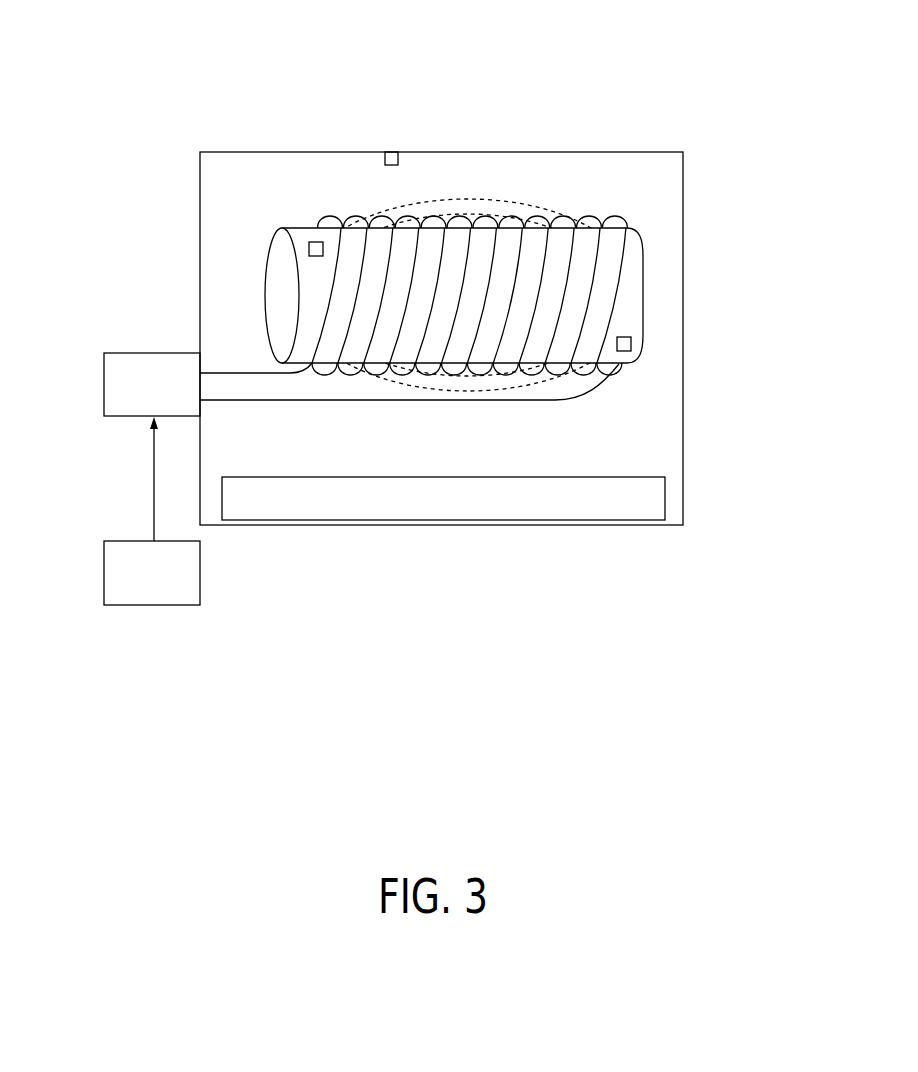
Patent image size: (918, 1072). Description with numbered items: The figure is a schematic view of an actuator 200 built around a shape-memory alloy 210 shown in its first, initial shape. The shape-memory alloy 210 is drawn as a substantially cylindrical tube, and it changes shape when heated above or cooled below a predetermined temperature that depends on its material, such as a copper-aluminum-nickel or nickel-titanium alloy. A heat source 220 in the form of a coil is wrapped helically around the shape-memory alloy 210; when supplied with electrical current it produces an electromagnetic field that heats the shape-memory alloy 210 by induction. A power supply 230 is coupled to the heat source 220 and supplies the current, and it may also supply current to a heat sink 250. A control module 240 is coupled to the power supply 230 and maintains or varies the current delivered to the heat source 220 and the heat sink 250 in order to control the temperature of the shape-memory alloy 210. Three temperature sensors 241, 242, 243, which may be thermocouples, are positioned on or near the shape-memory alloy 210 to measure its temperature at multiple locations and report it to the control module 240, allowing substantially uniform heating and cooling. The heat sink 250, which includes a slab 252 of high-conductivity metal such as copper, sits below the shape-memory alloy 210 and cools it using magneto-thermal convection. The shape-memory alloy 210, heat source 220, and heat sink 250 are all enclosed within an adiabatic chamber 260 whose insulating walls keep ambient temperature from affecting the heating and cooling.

The actuator 200 is at (237, 128).
The shape-memory alloy 210 is at (643, 306).
The heat source 220 is at (578, 393).
The power supply 230 is at (104, 383).
The control module 240 is at (103, 571).
The temperature sensor 241 is at (309, 243).
The temperature sensor 242 is at (632, 346).
The temperature sensor 243 is at (398, 152).
The heat sink 250 is at (443, 498).
The slab 252 is at (443, 498).
The adiabatic chamber 260 is at (200, 250).